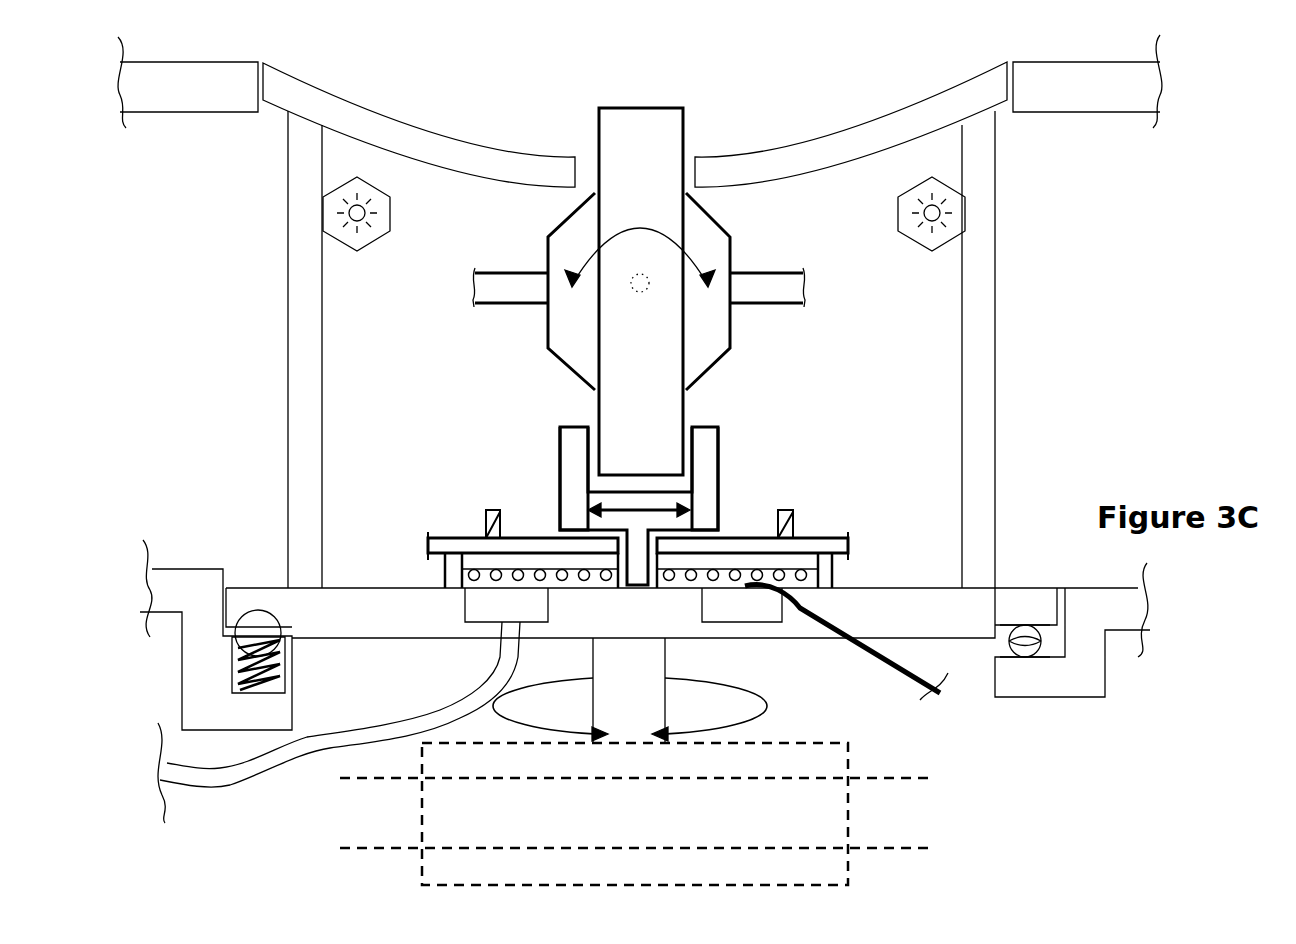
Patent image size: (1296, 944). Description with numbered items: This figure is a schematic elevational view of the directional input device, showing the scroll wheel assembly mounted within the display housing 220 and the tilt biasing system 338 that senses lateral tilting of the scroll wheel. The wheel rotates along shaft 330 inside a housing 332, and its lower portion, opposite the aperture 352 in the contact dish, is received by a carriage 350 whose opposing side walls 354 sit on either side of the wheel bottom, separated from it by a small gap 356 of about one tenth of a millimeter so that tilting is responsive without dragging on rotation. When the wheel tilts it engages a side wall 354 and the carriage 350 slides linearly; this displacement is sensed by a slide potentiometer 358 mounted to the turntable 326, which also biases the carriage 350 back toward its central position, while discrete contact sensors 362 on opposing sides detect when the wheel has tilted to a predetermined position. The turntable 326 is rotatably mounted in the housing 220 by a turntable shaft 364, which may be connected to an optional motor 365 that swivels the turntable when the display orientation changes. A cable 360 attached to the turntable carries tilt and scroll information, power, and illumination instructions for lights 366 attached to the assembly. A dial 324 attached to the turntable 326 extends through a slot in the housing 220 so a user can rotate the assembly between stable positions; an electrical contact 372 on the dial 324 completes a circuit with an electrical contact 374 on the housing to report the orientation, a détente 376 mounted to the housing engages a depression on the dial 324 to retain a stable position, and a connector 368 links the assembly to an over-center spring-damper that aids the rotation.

The display housing 220 is at (195, 78).
The dial 324 is at (187, 585).
The turntable 326 is at (760, 112).
The shaft 330 is at (508, 285).
The rotatable housing 332 is at (718, 260).
The tilt biasing system 338 is at (520, 505).
The carriage 350 is at (707, 473).
The aperture 352 is at (580, 150).
The side walls 354 is at (560, 470).
The gap 356 is at (590, 425).
The slide potentiometer 358 is at (840, 560).
The cable 360 is at (268, 763).
The contact sensors 362 is at (487, 525).
The turntable shaft 364 is at (618, 653).
The motor 365 is at (740, 800).
The lights 366 is at (327, 223).
The connector 368 is at (925, 700).
The electrical contact 372 is at (1040, 633).
The electrical contact 374 is at (1030, 650).
The détente 376 is at (245, 655).